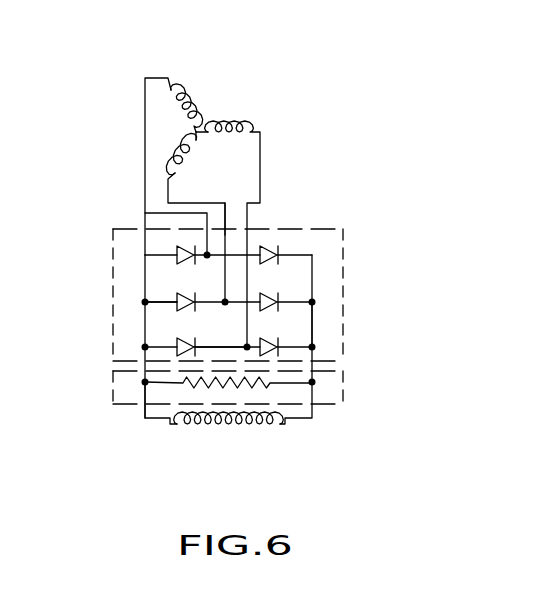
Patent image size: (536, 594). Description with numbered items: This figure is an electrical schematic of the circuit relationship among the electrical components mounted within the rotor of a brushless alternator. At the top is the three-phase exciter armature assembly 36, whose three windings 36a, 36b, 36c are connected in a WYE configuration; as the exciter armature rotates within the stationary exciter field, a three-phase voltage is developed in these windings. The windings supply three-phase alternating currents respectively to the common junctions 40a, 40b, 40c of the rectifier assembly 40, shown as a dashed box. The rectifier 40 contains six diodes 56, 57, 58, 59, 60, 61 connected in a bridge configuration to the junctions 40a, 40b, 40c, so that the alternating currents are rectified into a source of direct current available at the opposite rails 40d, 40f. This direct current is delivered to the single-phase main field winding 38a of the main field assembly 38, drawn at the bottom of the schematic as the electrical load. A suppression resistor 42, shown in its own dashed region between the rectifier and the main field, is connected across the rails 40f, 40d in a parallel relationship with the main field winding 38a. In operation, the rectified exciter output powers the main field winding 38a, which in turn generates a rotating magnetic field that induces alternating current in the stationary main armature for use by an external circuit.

The exciter armature assembly 36 is at (209, 90).
The exciter armature winding 36a is at (224, 128).
The exciter armature winding 36b is at (185, 110).
The exciter armature winding 36c is at (176, 162).
The rectifier assembly 40 is at (325, 228).
The common junction 40a is at (221, 235).
The common junction 40b is at (212, 304).
The common junction 40c is at (225, 348).
The rail 40d is at (313, 322).
The rail 40f is at (145, 396).
The suppression resistor 42 is at (356, 384).
The diode 56 is at (180, 247).
The diode 57 is at (262, 240).
The diode 58 is at (180, 295).
The diode 59 is at (272, 291).
The diode 60 is at (177, 349).
The diode 61 is at (270, 338).
The main field assembly 38 is at (296, 455).
The main field winding 38a is at (232, 428).